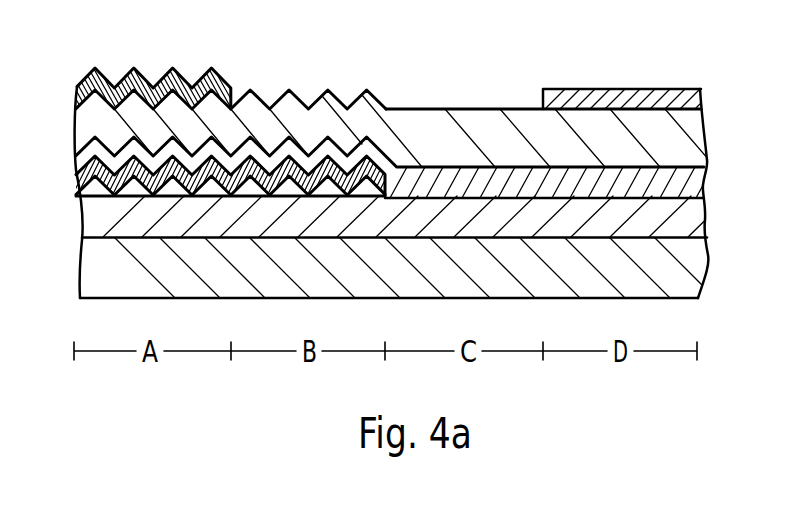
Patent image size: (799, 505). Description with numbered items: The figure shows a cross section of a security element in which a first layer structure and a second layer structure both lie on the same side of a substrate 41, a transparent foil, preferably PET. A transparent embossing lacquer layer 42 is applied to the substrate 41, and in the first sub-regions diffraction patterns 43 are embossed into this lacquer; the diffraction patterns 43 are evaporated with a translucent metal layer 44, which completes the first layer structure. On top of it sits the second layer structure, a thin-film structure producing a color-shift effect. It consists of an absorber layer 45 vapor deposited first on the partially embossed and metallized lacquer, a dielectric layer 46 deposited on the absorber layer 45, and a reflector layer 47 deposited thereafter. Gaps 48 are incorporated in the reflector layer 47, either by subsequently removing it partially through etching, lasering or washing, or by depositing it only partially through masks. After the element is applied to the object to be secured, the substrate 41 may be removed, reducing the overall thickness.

The substrate 41 is at (687, 268).
The embossing lacquer layer 42 is at (687, 220).
The diffraction patterns 43 is at (102, 194).
The translucent metal layer 44 is at (78, 178).
The absorber layer 45 is at (687, 183).
The dielectric layer 46 is at (683, 142).
The reflector layer 47 is at (142, 80).
The gaps 48 is at (432, 95).